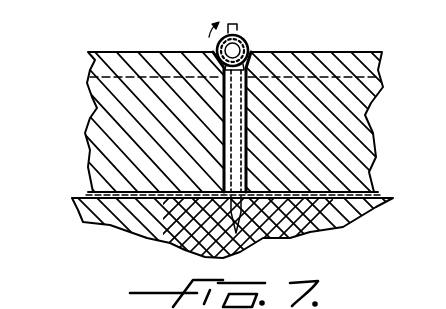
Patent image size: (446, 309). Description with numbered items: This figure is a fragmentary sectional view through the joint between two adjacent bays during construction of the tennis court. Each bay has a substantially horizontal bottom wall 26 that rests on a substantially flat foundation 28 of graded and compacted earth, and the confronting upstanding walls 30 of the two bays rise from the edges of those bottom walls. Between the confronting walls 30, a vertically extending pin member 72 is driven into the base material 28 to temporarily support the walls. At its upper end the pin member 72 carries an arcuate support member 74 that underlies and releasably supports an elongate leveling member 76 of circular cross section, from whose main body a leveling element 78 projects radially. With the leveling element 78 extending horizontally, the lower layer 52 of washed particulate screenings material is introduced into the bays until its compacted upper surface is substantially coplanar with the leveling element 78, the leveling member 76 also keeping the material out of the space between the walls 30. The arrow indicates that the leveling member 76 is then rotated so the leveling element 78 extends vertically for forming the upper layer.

The layer of washed hard particulate screenings material 52 is at (97, 107).
The upstanding side and end walls 30 is at (218, 50).
The arcuate support member 74 is at (248, 68).
The leveling member 76 is at (241, 36).
The leveling element 78 is at (211, 45).
The bottom wall 26 is at (90, 194).
The foundation 28 is at (108, 218).
The pin member 72 is at (290, 238).